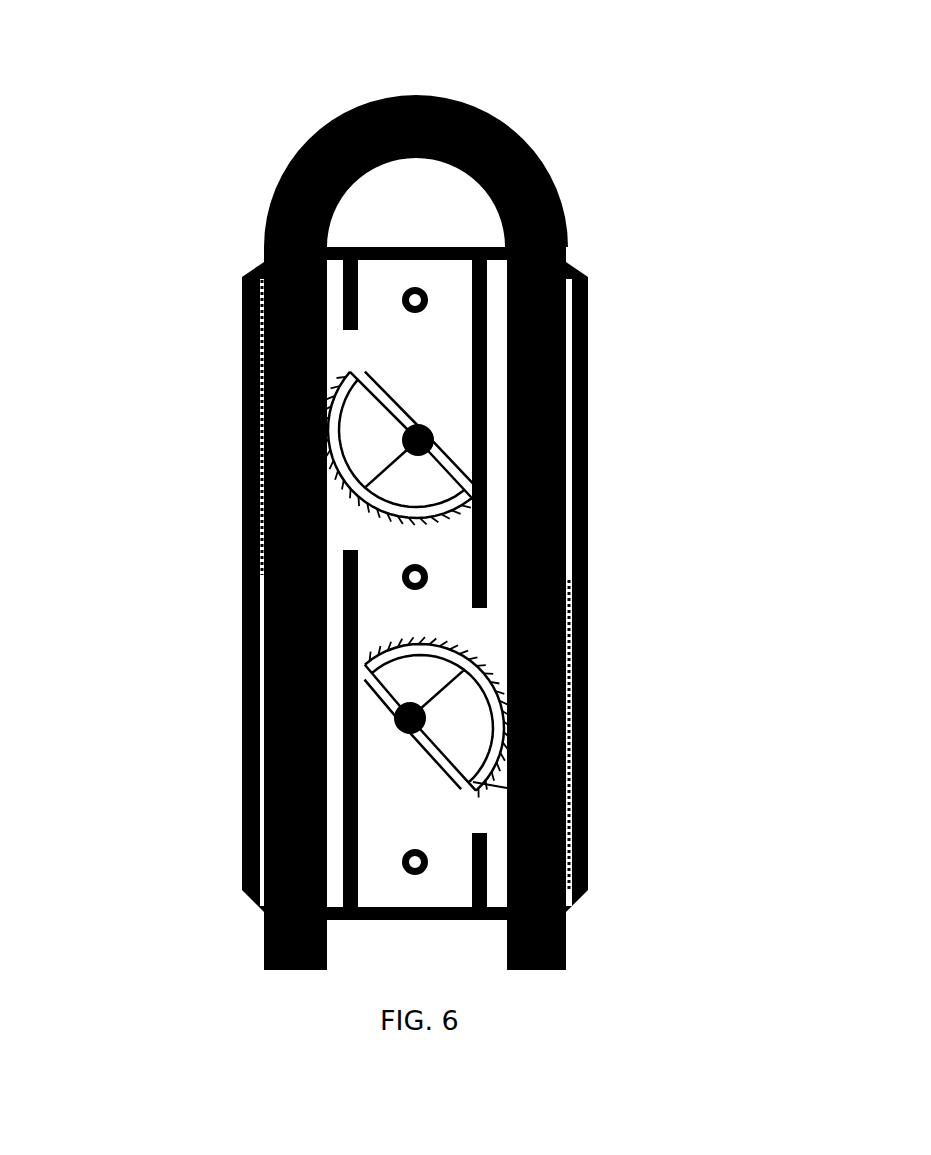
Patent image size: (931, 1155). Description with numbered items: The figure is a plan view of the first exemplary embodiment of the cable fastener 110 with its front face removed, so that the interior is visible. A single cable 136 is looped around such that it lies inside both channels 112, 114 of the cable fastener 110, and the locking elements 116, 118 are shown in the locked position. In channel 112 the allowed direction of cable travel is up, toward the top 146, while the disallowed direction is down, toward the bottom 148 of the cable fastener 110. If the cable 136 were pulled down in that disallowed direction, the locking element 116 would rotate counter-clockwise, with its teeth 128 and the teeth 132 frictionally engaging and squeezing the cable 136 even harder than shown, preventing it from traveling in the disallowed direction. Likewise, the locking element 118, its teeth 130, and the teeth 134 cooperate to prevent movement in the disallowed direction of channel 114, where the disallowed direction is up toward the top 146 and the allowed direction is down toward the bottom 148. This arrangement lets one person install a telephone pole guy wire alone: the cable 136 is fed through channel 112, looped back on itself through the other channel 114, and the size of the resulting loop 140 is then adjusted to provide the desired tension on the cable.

The cable fastener 110 is at (232, 144).
The channel 112 is at (243, 730).
The channel 114 is at (588, 525).
The locking element 116 is at (370, 398).
The locking element 118 is at (588, 828).
The teeth 128 is at (363, 503).
The teeth 130 is at (462, 653).
The teeth 132 is at (242, 465).
The teeth 134 is at (587, 672).
The cable 136 is at (565, 227).
The loop 140 is at (525, 140).
The top 146 is at (403, 247).
The bottom 148 is at (402, 920).